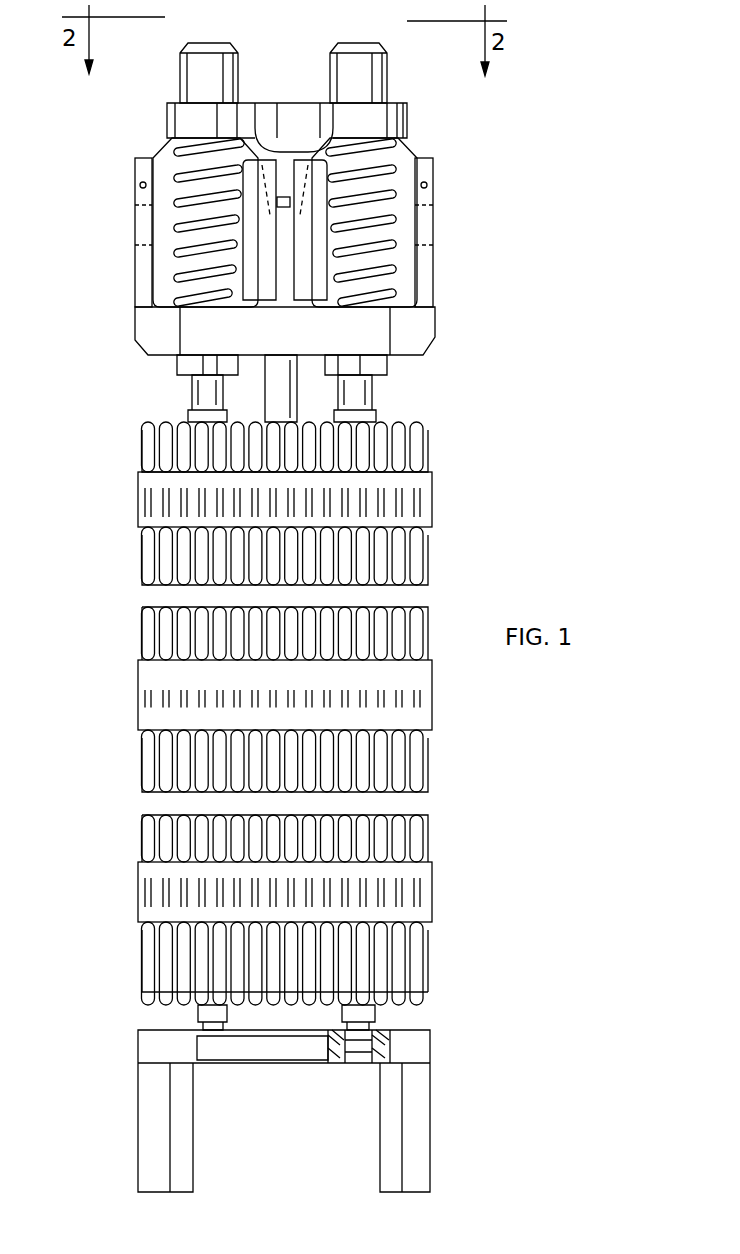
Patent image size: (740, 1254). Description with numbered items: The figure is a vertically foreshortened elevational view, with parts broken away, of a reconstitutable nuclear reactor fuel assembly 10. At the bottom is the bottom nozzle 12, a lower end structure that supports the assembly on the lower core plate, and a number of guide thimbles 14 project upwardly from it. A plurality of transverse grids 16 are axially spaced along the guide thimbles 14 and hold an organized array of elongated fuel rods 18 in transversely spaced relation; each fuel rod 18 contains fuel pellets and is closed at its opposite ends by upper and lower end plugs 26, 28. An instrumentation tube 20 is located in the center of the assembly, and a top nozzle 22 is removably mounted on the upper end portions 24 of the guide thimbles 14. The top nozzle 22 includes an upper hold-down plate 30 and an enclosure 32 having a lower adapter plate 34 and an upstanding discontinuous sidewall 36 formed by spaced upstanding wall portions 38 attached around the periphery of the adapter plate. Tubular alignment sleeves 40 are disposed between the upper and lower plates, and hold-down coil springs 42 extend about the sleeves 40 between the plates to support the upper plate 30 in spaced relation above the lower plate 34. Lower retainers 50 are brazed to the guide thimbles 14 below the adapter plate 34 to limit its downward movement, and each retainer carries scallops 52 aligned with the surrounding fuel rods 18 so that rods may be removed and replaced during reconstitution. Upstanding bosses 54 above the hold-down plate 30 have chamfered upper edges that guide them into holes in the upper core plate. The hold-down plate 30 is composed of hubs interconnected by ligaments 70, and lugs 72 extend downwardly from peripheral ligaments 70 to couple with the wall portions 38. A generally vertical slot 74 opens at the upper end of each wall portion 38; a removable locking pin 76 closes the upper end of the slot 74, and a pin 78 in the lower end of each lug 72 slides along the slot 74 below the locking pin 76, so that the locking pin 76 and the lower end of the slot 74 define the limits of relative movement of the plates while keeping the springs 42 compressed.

The fuel assembly 10 is at (488, 438).
The bottom nozzle 12 is at (432, 1097).
The guide thimbles 14 is at (191, 400).
The transverse grids 16 is at (284, 716).
The fuel rods 18 is at (152, 842).
The instrumentation tube 20 is at (280, 370).
The top nozzle 22 is at (453, 143).
The upper end portions 24 is at (190, 386).
The upper end plug 26 is at (150, 432).
The lower end plug 28 is at (152, 992).
The upper hold-down plate 30 is at (407, 126).
The enclosure 32 is at (436, 333).
The lower adapter plate 34 is at (423, 320).
The discontinuous sidewall 36 is at (153, 290).
The upstanding wall portions 38 is at (135, 220).
The tubular alignment sleeves 40 is at (190, 262).
The hold-down coil springs 42 is at (185, 228).
The lower retainers 50 is at (195, 360).
The scallops 52 is at (385, 366).
The upstanding bosses 54 is at (340, 45).
The ligaments 70 is at (245, 112).
The lugs 72 is at (308, 145).
The vertical slot 74 is at (291, 218).
The locking pin 76 is at (270, 215).
The pin 78 is at (277, 200).